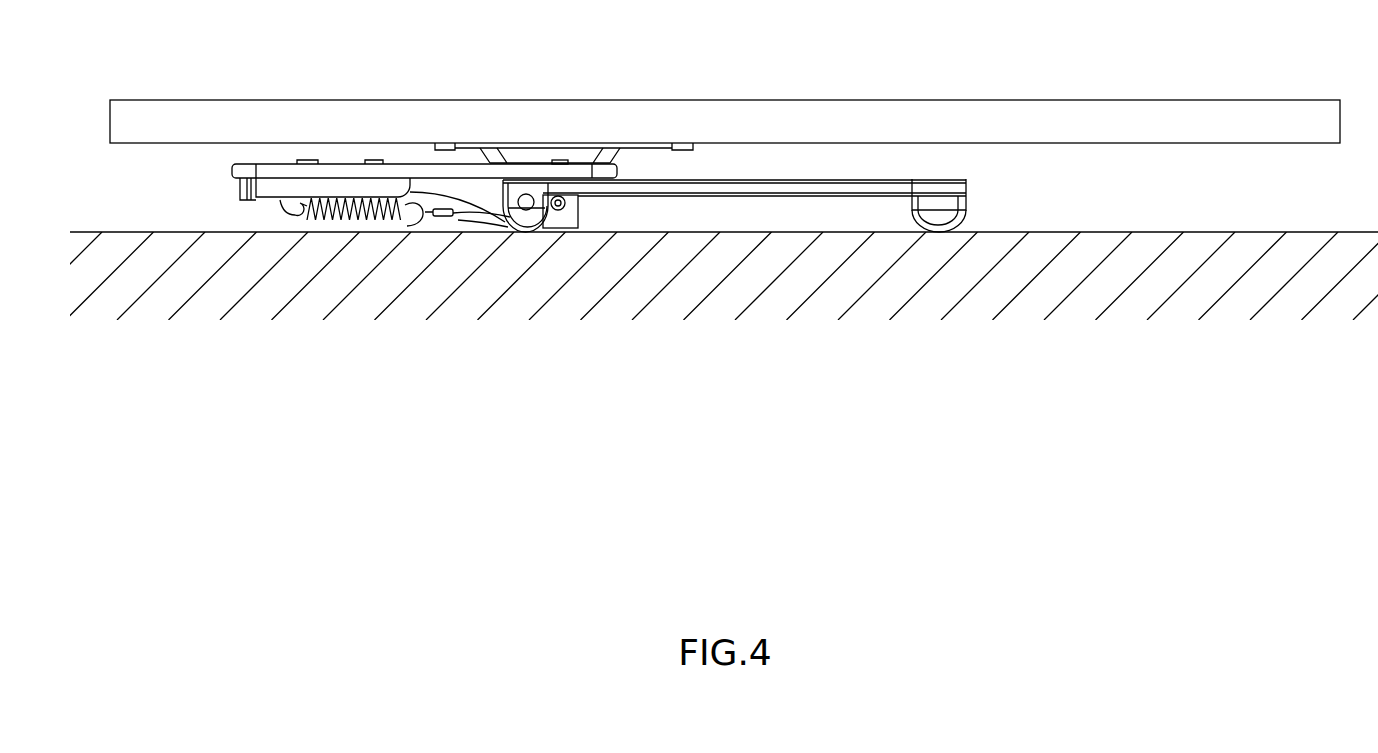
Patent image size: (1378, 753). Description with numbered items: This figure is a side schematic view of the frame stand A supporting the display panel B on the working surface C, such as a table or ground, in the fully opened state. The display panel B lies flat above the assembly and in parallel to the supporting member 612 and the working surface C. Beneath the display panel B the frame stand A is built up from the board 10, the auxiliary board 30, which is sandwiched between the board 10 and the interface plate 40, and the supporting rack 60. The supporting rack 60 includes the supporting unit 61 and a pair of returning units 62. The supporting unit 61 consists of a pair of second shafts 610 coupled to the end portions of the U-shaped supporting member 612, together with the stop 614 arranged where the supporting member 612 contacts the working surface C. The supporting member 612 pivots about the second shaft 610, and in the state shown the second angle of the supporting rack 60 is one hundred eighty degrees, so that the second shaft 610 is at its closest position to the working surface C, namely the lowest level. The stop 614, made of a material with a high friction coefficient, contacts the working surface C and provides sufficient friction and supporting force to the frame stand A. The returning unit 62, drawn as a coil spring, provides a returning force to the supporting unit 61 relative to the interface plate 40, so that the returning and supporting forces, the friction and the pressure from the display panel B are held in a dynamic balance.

The board 10 is at (578, 153).
The auxiliary board 30 is at (520, 157).
The interface plate 40 is at (281, 173).
The supporting rack 60 is at (738, 482).
The supporting unit 61 is at (537, 410).
The second shaft 610 is at (524, 203).
The supporting member 612 is at (760, 188).
The stop 614 is at (935, 217).
The returning unit 62 is at (370, 223).
The frame stand A is at (273, 203).
The display panel B is at (145, 146).
The working surface C is at (1153, 229).